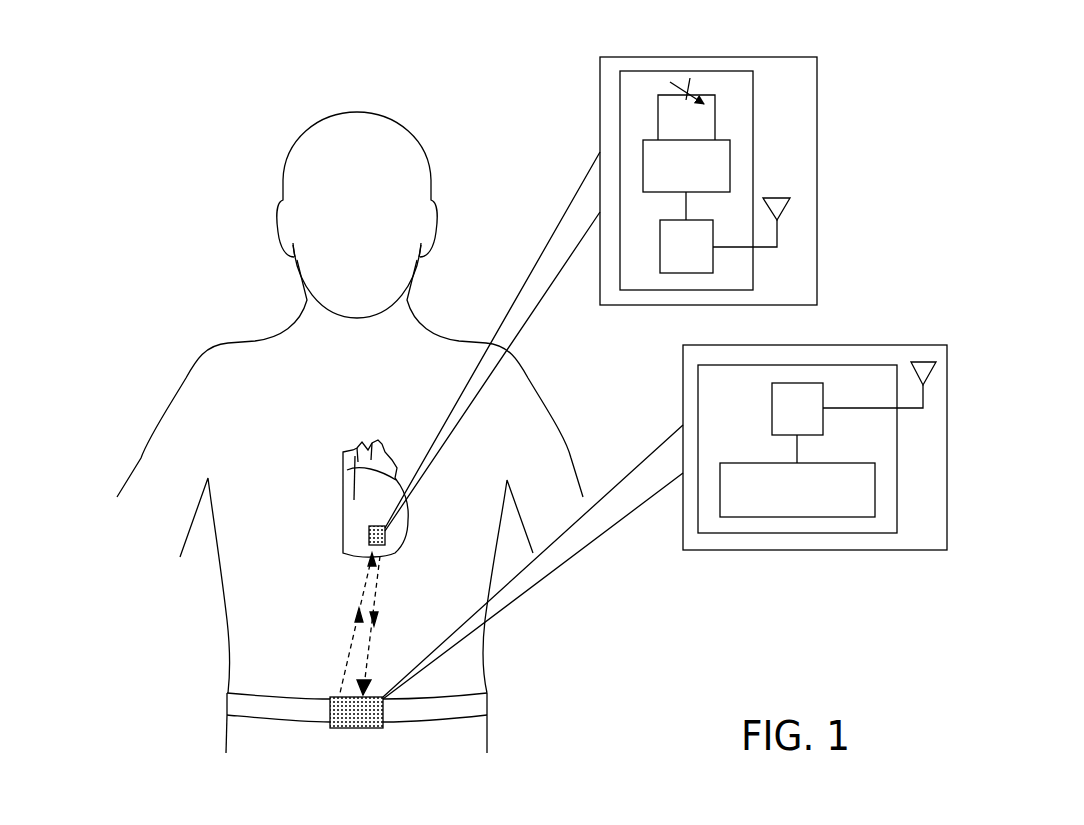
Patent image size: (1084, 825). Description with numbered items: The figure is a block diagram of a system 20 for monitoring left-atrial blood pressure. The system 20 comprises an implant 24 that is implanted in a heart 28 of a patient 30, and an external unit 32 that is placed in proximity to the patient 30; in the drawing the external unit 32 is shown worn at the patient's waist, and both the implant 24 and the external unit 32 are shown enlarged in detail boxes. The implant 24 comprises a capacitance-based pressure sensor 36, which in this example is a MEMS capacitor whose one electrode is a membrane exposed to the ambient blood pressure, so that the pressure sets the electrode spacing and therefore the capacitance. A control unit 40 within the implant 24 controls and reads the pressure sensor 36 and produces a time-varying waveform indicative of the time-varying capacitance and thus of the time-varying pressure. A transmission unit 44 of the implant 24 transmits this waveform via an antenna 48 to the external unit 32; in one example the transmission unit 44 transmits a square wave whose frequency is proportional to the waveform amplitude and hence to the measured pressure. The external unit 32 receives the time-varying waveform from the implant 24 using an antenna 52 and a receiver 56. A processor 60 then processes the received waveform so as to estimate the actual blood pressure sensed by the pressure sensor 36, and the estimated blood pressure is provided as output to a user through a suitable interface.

The system 20 is at (166, 51).
The implant 24 is at (386, 529).
The heart 28 is at (342, 521).
The patient 30 is at (183, 352).
The external unit 32 is at (355, 732).
The pressure sensor 36 is at (683, 80).
The control unit 40 is at (643, 145).
The transmission unit 44 is at (672, 275).
The antenna 48 is at (777, 197).
The antenna 52 is at (912, 360).
The receiver 56 is at (772, 393).
The processor 60 is at (797, 518).